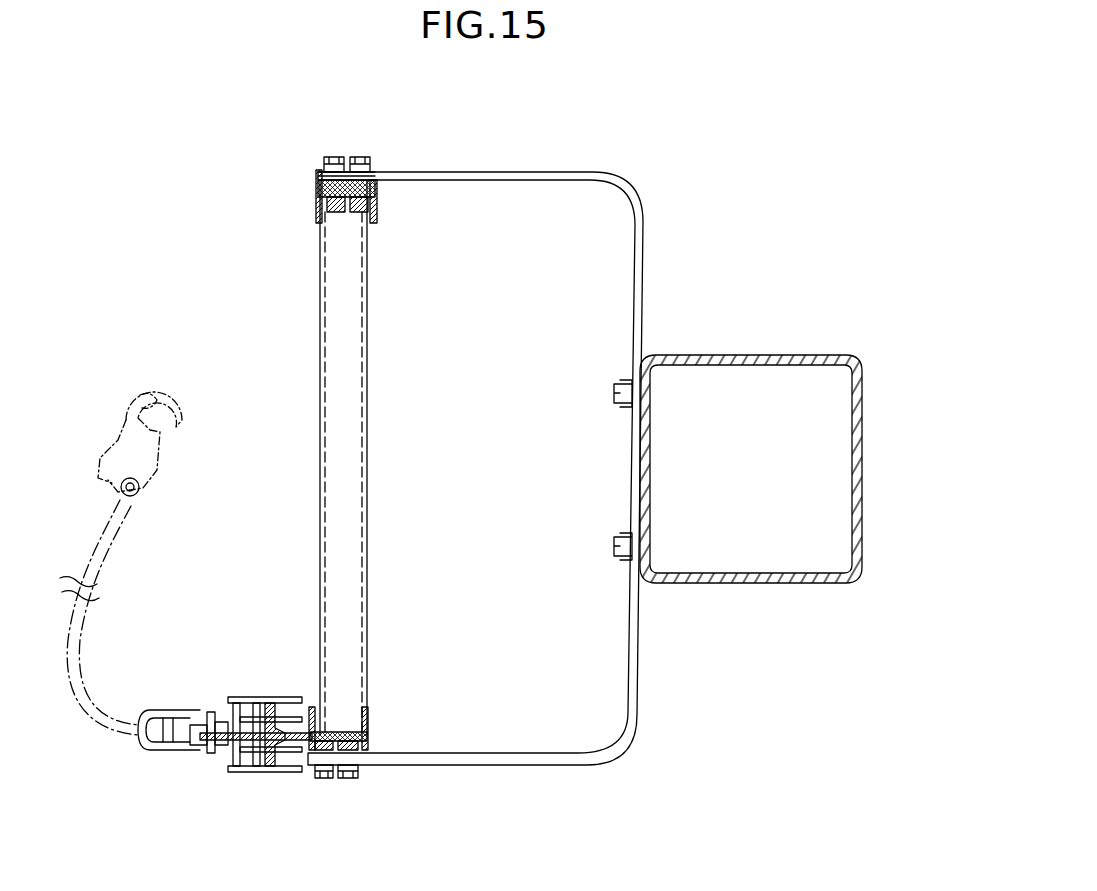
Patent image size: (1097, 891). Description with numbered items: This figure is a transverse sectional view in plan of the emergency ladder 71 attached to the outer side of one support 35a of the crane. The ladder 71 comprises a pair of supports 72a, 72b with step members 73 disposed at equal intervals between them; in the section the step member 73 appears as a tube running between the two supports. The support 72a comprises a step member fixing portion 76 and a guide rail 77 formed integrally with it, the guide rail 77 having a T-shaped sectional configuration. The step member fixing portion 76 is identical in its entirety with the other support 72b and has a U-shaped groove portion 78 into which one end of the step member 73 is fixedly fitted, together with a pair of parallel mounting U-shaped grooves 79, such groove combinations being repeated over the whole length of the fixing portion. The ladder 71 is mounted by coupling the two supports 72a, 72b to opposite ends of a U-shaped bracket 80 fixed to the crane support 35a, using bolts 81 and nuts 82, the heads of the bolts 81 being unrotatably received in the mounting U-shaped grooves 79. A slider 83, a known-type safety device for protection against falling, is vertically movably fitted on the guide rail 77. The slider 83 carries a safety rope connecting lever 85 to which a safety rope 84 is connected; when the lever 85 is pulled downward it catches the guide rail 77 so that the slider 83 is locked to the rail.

The support 35a is at (762, 586).
The emergency ladder 71 is at (309, 294).
The support 72a is at (368, 742).
The support 72b is at (318, 193).
The step member 73 is at (368, 402).
The step member fixing portion 76 is at (365, 722).
The guide rail 77 is at (262, 770).
The U-shaped groove portion 78 is at (325, 215).
The mounting U-shaped grooves 79 is at (322, 176).
The U-shaped bracket 80 is at (640, 272).
The bolts 81 is at (350, 205).
The nuts 82 is at (360, 156).
The slider 83 is at (250, 697).
The safety rope 84 is at (68, 575).
The safety rope connecting lever 85 is at (212, 754).